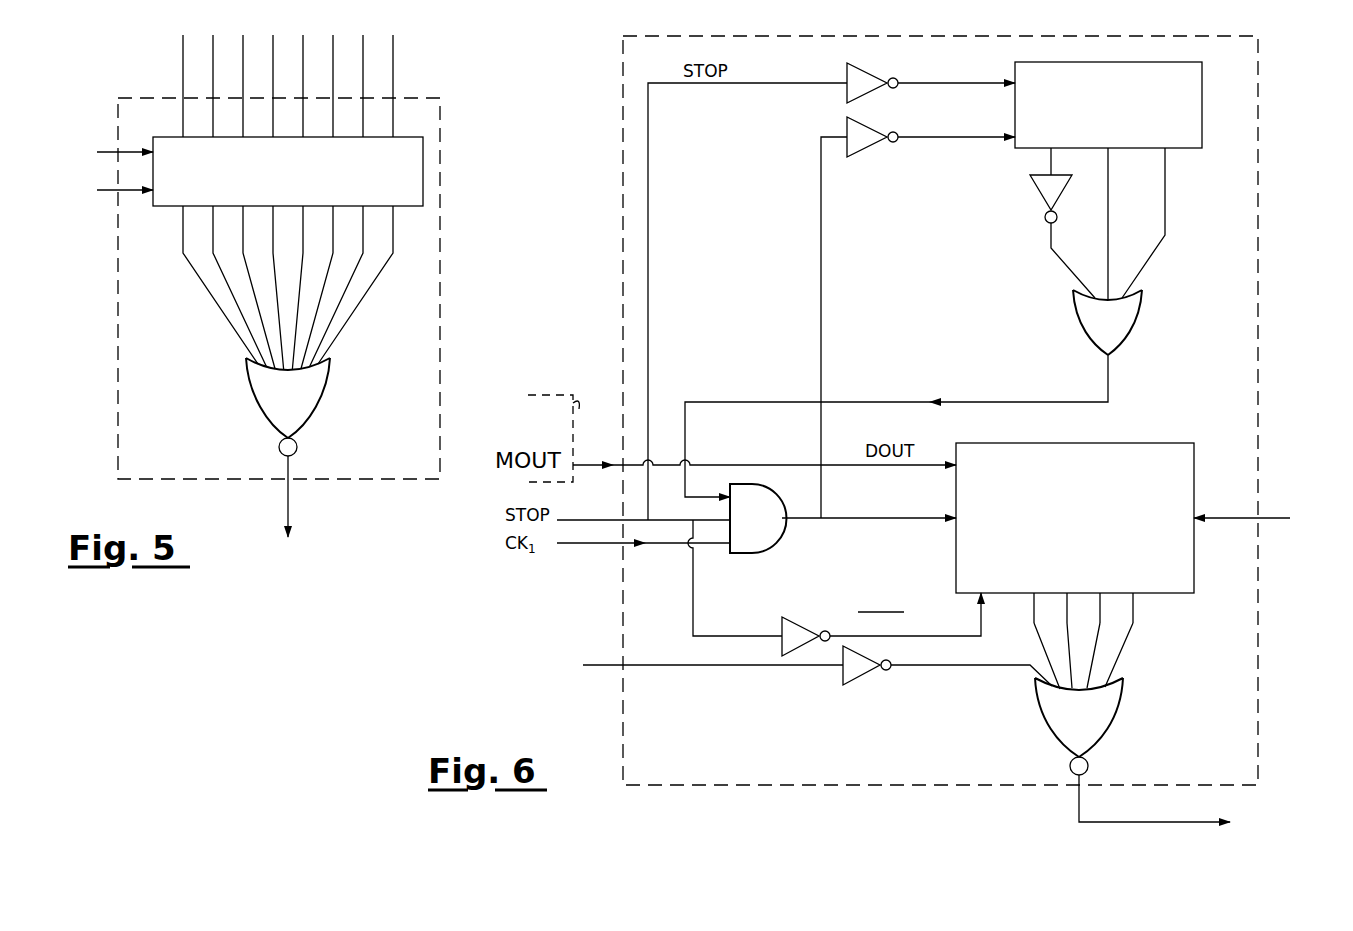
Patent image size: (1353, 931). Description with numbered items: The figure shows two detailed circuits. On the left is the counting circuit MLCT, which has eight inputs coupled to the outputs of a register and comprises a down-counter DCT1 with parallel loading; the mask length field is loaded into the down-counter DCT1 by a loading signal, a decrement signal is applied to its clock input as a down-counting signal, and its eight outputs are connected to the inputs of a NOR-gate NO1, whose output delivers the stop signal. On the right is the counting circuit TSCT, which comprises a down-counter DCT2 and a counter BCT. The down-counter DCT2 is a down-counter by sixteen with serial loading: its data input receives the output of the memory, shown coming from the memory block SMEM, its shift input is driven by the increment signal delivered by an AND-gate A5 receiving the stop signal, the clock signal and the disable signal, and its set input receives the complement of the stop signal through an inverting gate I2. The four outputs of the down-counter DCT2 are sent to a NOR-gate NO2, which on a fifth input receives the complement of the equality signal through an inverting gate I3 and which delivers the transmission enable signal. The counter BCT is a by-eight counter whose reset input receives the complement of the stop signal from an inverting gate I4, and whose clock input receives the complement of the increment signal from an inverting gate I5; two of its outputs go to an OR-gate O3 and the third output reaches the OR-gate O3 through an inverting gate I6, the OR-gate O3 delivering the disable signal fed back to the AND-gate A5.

In FIG. 5, the counting circuit MLCT is at (440, 133).
In FIG. 5, the down-counter DCT1 is at (256, 186).
In FIG. 5, the NOR-gate NO1 is at (268, 408).
In FIG. 6, the counting circuit TSCT is at (640, 36).
In FIG. 6, the shift memory SMEM is at (587, 388).
In FIG. 6, the AND-gate A5 is at (738, 532).
In FIG. 6, the inverting gate I2 is at (808, 629).
In FIG. 6, the inverting gate I3 is at (865, 677).
In FIG. 6, the inverting gate I4 is at (849, 92).
In FIG. 6, the inverting gate I5 is at (871, 149).
In FIG. 6, the inverting gate I6 is at (1038, 182).
In FIG. 6, the counter BCT is at (1090, 111).
In FIG. 6, the OR-gate O3 is at (1095, 340).
In FIG. 6, the down-counter DCT2 is at (1060, 552).
In FIG. 6, the NOR-gate NO2 is at (1058, 729).